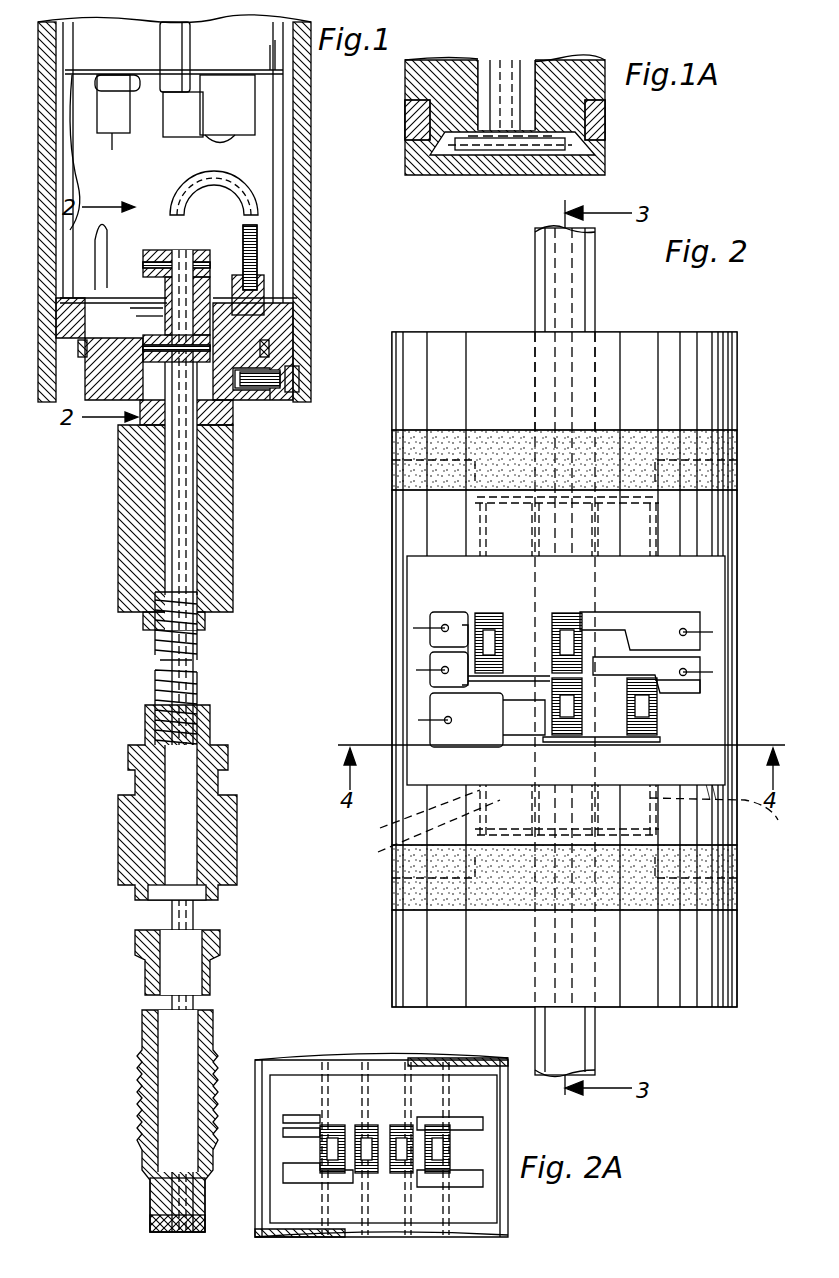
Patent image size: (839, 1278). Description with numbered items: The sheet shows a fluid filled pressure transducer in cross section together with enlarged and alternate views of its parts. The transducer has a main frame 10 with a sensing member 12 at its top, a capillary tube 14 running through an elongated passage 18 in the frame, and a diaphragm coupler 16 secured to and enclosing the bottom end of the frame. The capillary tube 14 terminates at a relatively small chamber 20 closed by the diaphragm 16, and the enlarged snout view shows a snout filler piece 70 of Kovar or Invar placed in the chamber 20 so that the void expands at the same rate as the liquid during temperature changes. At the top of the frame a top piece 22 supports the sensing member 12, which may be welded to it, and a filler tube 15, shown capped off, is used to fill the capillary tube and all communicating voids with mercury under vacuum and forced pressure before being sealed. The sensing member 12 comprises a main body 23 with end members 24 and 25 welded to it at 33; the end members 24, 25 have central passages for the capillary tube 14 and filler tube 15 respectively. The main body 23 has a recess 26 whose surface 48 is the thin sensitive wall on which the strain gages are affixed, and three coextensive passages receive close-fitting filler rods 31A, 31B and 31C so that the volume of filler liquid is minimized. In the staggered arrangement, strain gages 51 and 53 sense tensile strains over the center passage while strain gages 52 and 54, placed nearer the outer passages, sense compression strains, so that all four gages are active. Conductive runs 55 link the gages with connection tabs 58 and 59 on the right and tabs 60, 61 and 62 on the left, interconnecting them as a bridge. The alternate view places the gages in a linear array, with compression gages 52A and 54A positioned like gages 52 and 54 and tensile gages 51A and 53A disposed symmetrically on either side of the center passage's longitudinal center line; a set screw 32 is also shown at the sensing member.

In FIG. 1, the main frame 10 is at (112, 522).
In FIG. 1, the sensing member 12 is at (156, 250).
In FIG. 2, the sensing member 12 is at (714, 330).
In FIG. 1, the capillary tube 14 is at (189, 513).
In FIG. 1A, the capillary tube 14 is at (505, 75).
In FIG. 2, the capillary tube 14 is at (594, 1046).
In FIG. 1, the filler tube 15 is at (255, 201).
In FIG. 2, the filler tube 15 is at (594, 297).
In FIG. 1, the diaphragm coupler 16 is at (150, 1232).
In FIG. 1A, the diaphragm coupler 16 is at (458, 176).
In FIG. 1, the elongated passage 18 is at (195, 965).
In FIG. 1, the chamber 20 is at (158, 1196).
In FIG. 1A, the chamber 20 is at (565, 140).
In FIG. 1, the top piece 22 is at (252, 398).
In FIG. 1, the main body 23 is at (212, 324).
In FIG. 2, the main body 23 is at (740, 523).
In FIG. 1, the end member 24 is at (212, 345).
In FIG. 2, the end member 24 is at (392, 930).
In FIG. 1, the end member 25 is at (215, 256).
In FIG. 2, the end member 25 is at (390, 410).
In FIG. 2, the recess 26 is at (706, 582).
In FIG. 2A, the recess 26 is at (484, 1206).
In FIG. 1, the set screw 32 is at (250, 293).
In FIG. 2, the weld 33 is at (740, 446).
In FIG. 2, the surface 48 is at (418, 593).
In FIG. 2A, the surface 48 is at (280, 1085).
In FIG. 2, the strain gage 51 is at (577, 614).
In FIG. 2, the strain gage 52 is at (480, 614).
In FIG. 2, the strain gage 53 is at (568, 740).
In FIG. 2, the strain gage 54 is at (658, 714).
In FIG. 2, the conductive runs 55 is at (695, 612).
In FIG. 2, the connection tab 58 is at (700, 642).
In FIG. 2, the connection tab 59 is at (700, 688).
In FIG. 2, the connection tab 60 is at (435, 611).
In FIG. 2, the connection tab 61 is at (440, 653).
In FIG. 2, the connection tab 62 is at (430, 703).
In FIG. 1A, the snout filler piece 70 is at (510, 148).
In FIG. 2, the filler rod 31A is at (409, 815).
In FIG. 2, the filler rod 31B is at (419, 832).
In FIG. 2, the filler rod 31C is at (724, 815).
In FIG. 2A, the tensile strain gage 51A is at (358, 1122).
In FIG. 2A, the compression strain gage 52A is at (323, 1122).
In FIG. 2A, the tensile strain gage 53A is at (400, 1122).
In FIG. 2A, the compression strain gage 54A is at (450, 1122).